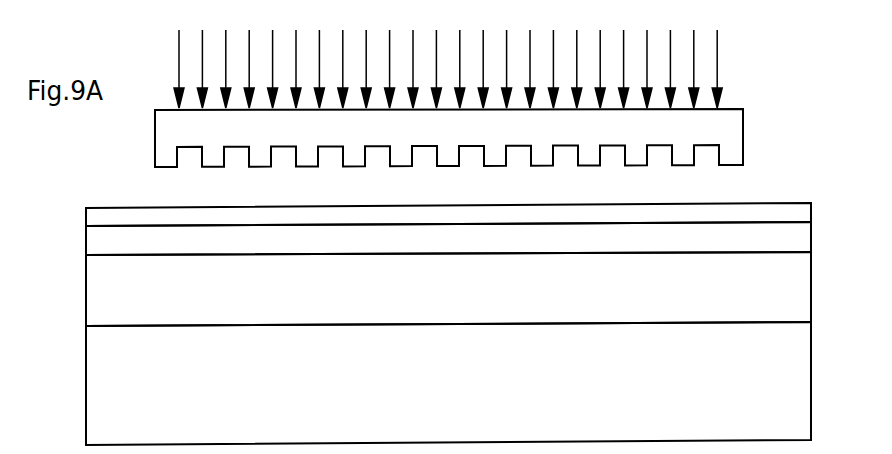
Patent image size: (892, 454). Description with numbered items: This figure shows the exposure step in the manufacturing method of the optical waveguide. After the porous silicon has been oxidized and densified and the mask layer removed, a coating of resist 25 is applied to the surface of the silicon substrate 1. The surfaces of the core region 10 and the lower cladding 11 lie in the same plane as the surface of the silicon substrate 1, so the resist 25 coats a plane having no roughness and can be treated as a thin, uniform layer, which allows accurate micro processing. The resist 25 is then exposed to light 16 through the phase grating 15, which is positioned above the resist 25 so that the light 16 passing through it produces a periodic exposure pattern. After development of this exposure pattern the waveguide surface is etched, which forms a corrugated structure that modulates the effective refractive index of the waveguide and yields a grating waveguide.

The light 16 is at (717, 53).
The phase grating 15 is at (730, 128).
The resist 25 is at (750, 210).
The core region 10 is at (800, 242).
The lower cladding 11 is at (803, 302).
The silicon substrate 1 is at (803, 380).